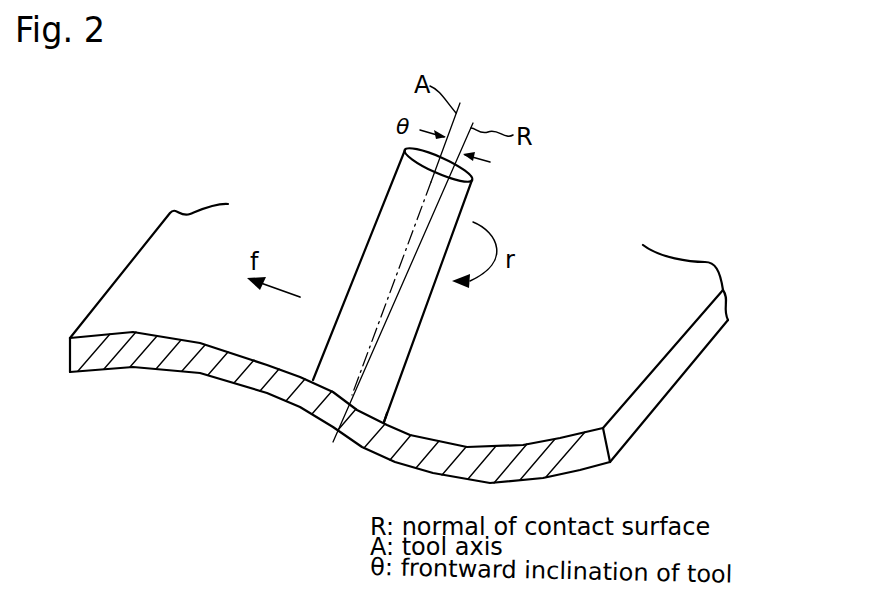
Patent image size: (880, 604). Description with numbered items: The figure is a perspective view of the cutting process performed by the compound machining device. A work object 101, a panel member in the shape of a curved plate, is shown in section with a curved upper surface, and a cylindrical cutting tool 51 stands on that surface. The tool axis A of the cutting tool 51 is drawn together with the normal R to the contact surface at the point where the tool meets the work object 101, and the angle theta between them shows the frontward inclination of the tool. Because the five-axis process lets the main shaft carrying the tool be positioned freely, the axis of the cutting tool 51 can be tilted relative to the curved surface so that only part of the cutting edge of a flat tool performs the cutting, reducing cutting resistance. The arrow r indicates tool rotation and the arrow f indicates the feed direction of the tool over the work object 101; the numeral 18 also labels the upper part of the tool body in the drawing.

The work object 101 is at (148, 268).
The rotary tool 18 is at (403, 180).
The cutting tool 51 is at (410, 350).